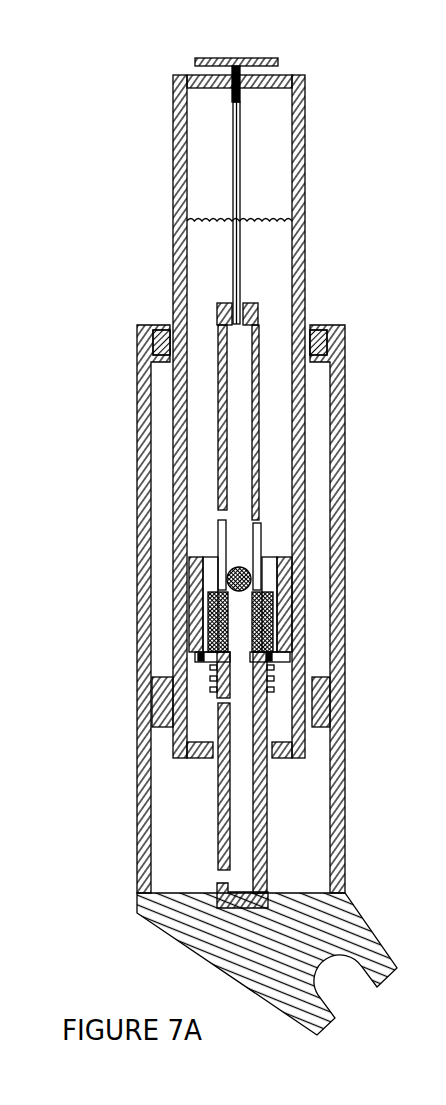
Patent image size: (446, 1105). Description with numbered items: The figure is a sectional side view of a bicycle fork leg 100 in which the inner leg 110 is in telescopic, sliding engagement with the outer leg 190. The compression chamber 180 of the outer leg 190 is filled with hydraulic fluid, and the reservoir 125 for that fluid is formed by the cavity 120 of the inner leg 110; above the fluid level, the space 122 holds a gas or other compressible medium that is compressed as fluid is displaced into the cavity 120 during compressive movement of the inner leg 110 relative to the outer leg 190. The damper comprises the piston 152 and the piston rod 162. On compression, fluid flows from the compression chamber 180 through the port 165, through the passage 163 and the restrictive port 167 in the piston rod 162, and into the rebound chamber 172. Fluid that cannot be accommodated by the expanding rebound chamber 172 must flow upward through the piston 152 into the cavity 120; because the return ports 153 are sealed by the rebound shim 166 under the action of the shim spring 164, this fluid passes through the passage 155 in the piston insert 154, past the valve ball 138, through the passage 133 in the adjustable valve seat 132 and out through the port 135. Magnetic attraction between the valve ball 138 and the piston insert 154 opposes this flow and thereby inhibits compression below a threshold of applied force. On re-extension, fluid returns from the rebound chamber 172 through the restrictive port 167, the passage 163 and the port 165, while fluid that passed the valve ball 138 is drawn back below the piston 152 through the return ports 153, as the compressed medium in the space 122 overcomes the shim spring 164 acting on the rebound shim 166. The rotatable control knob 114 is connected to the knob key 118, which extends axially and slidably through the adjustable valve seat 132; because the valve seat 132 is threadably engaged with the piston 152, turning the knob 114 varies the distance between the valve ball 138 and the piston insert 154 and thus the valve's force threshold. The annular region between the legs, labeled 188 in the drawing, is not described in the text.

The bicycle fork leg 100 is at (93, 112).
The inner leg 110 is at (175, 242).
The rotatable control knob 114 is at (253, 57).
The knob key 118 is at (240, 160).
The cavity 120 is at (211, 276).
The space above the fluid level 122 is at (267, 175).
The reservoir 125 is at (255, 213).
The adjustable valve seat 132 is at (260, 315).
The passage 133 is at (240, 540).
The port 135 is at (217, 515).
The valve ball 138 is at (250, 572).
The piston 152 is at (285, 575).
The return ports 153 is at (273, 603).
The piston insert 154 is at (242, 625).
The passage 155 is at (272, 656).
The piston rod 162 is at (268, 790).
The passage 163 is at (242, 843).
The shim spring 164 is at (316, 697).
The port 165 is at (220, 877).
The rebound shim 166 is at (274, 678).
The restrictive port 167 is at (220, 703).
The rebound chamber 172 is at (200, 683).
The compression chamber 180 is at (189, 816).
The annular chamber 188 is at (162, 608).
The outer leg 190 is at (147, 385).